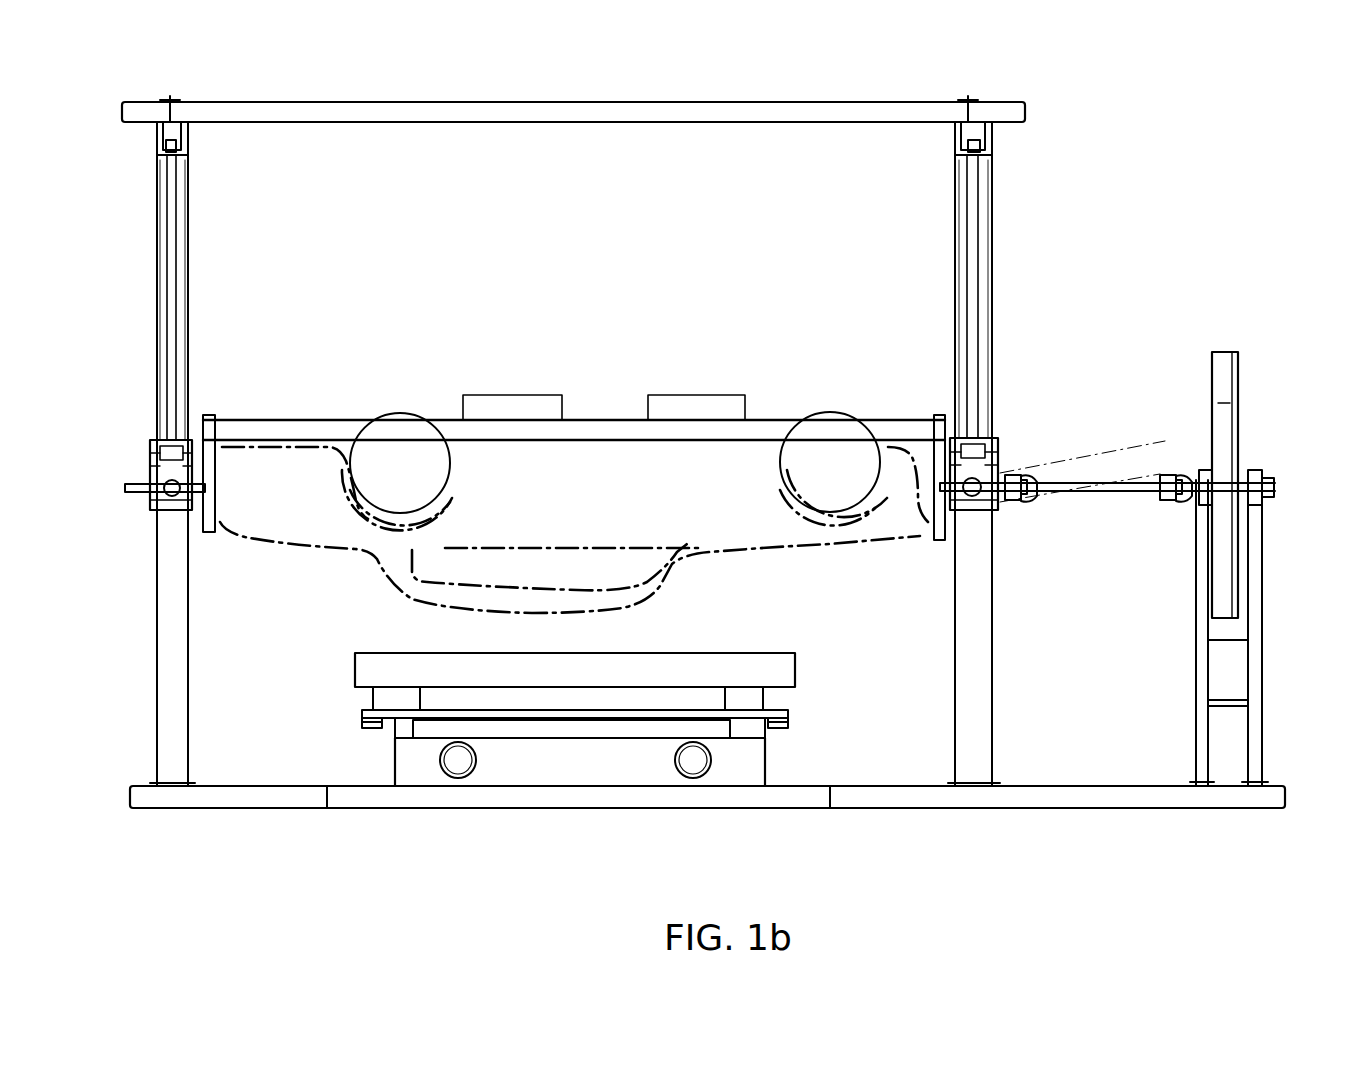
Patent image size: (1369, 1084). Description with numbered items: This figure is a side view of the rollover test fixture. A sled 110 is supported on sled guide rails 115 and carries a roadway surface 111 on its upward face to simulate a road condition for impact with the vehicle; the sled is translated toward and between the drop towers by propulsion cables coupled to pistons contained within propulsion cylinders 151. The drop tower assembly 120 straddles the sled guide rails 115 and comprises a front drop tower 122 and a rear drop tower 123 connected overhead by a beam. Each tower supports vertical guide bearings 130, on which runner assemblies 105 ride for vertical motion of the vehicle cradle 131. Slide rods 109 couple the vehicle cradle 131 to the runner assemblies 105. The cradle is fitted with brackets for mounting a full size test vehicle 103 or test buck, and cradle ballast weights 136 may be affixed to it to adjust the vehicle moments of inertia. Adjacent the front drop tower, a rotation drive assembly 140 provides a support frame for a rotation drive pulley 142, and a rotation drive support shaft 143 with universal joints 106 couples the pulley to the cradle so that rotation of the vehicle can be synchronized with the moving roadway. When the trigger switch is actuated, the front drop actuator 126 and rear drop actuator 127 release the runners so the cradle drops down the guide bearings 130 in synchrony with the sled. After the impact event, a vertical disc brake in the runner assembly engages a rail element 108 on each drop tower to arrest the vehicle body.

The test vehicle 103 is at (588, 506).
The runner assembly 105 is at (160, 518).
The universal joint 106 is at (1045, 493).
The rail element 108 is at (172, 260).
The slide rod 109 is at (150, 488).
The sled 110 is at (563, 730).
The roadway surface 111 is at (402, 653).
The sled guide rail 115 is at (395, 763).
The drop tower assembly 120 is at (573, 89).
The front drop tower 122 is at (995, 262).
The rear drop tower 123 is at (160, 454).
The front drop actuator 126 is at (985, 133).
The rear drop actuator 127 is at (170, 140).
The vertical guide bearing 130 is at (190, 349).
The vehicle cradle 131 is at (600, 420).
The cradle ballast weight 136 is at (504, 395).
The rotation drive assembly 140 is at (1278, 488).
The rotation drive pulley 142 is at (1238, 374).
The rotation drive support shaft 143 is at (1125, 495).
The propulsion cylinder 151 is at (478, 762).